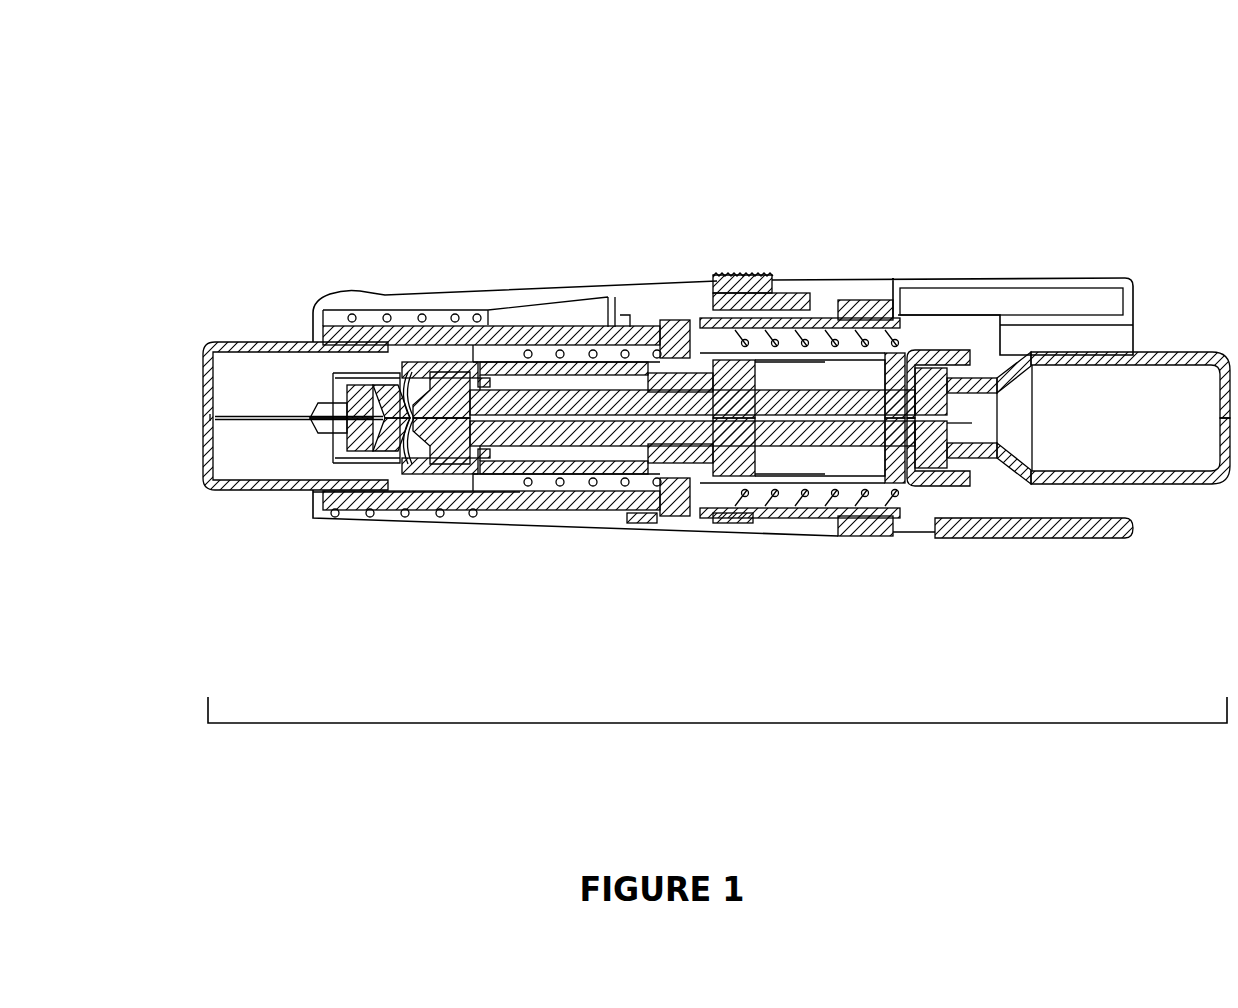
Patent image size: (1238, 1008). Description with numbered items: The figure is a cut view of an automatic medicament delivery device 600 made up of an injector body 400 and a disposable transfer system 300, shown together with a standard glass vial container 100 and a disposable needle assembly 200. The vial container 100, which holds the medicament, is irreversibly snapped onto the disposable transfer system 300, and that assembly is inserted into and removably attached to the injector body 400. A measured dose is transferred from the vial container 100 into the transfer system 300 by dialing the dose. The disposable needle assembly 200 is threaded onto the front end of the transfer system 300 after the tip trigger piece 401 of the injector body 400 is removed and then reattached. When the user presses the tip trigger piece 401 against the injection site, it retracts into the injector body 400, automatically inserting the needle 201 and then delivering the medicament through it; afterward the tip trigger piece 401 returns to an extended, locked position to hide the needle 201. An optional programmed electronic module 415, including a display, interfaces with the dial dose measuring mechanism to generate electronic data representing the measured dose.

The standard glass vial container 100 is at (1050, 445).
The disposable needle assembly 200 is at (318, 435).
The needle 201 is at (237, 422).
The disposable transfer system 300 is at (690, 437).
The injector body 400 is at (458, 312).
The tip trigger piece 401 is at (262, 340).
The programmed electronic module 415 is at (973, 303).
The automatic medicament delivery device 600 is at (717, 737).